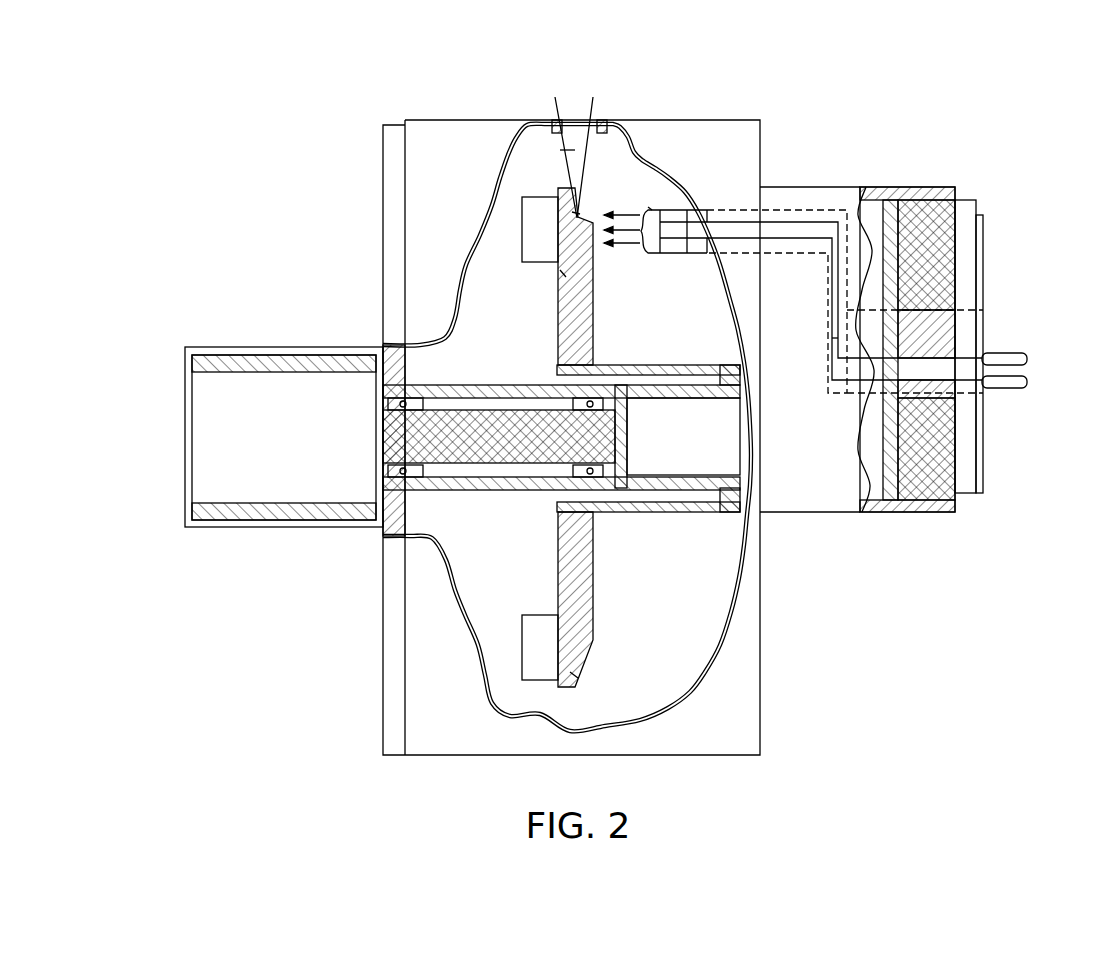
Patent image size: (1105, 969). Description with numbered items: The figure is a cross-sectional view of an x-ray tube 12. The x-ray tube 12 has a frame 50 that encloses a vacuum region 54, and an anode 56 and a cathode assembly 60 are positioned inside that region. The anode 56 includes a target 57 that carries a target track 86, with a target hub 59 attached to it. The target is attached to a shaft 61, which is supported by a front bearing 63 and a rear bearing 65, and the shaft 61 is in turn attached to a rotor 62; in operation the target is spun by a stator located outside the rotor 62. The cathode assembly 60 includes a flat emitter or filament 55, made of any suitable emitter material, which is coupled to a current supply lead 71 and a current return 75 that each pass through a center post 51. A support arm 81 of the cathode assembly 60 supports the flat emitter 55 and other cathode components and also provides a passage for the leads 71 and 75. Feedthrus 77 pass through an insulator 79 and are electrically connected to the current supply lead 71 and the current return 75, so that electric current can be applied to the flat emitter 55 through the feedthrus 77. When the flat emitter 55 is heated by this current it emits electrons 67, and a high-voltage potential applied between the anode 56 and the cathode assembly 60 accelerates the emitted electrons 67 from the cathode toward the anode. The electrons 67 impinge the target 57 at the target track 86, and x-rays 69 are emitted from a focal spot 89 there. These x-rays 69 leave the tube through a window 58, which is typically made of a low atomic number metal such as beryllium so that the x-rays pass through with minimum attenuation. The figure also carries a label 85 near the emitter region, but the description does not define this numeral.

The x-ray tube 12 is at (957, 560).
The frame 50 is at (524, 117).
The center post 51 is at (868, 406).
The vacuum region 54 is at (710, 563).
The flat emitter 55 is at (663, 253).
The anode 56 is at (632, 579).
The target 57 is at (580, 627).
The window 58 is at (578, 112).
The target hub 59 is at (680, 515).
The cathode assembly 60 is at (666, 276).
The shaft 61 is at (476, 458).
The rotor 62 is at (223, 510).
The front bearing 63 is at (562, 500).
The rear bearing 65 is at (384, 470).
The electrons 67 is at (628, 213).
The x-rays 69 is at (568, 150).
The current supply lead 71 is at (830, 338).
The current return 75 is at (817, 210).
The feedthrus 77 is at (1025, 372).
The insulator 79 is at (965, 258).
The support arm 81 is at (773, 205).
The inlet 85 is at (653, 207).
The target track 86 is at (566, 276).
The focal spot 89 is at (566, 216).